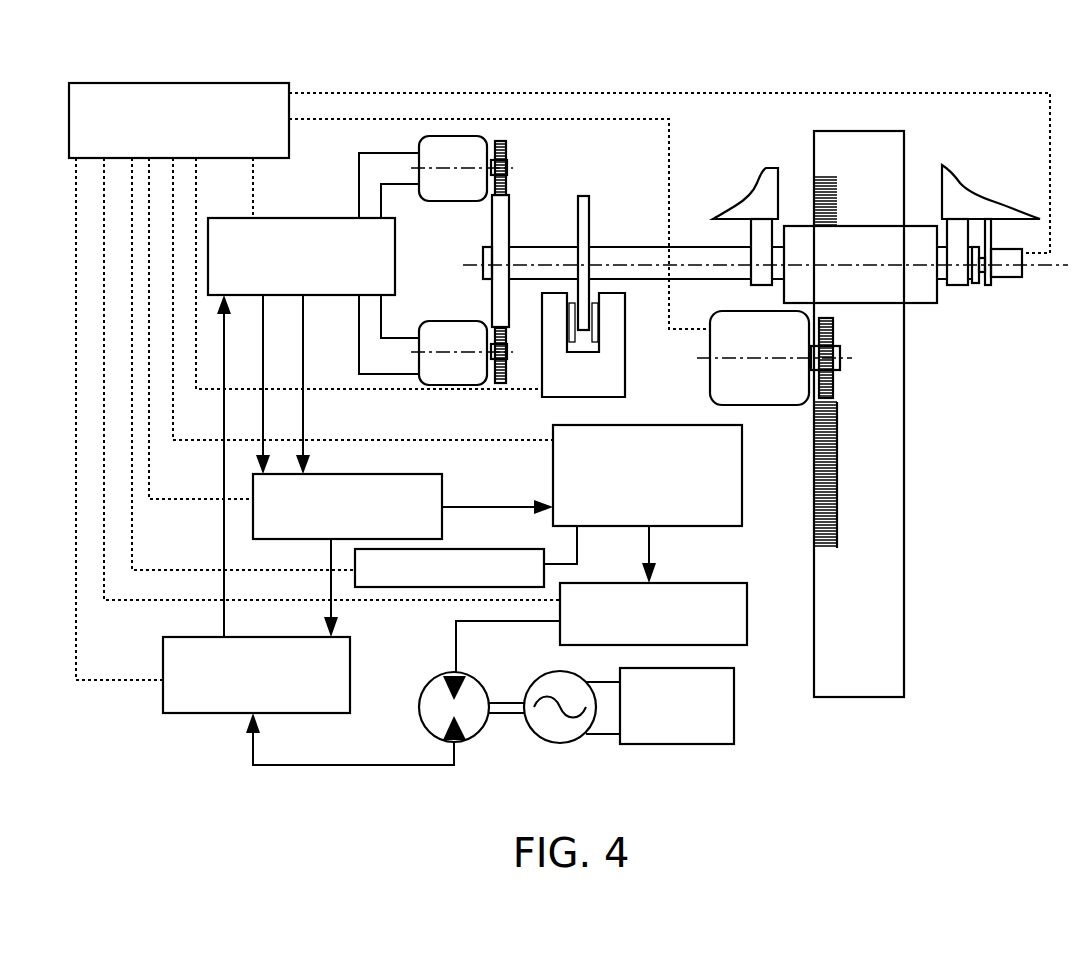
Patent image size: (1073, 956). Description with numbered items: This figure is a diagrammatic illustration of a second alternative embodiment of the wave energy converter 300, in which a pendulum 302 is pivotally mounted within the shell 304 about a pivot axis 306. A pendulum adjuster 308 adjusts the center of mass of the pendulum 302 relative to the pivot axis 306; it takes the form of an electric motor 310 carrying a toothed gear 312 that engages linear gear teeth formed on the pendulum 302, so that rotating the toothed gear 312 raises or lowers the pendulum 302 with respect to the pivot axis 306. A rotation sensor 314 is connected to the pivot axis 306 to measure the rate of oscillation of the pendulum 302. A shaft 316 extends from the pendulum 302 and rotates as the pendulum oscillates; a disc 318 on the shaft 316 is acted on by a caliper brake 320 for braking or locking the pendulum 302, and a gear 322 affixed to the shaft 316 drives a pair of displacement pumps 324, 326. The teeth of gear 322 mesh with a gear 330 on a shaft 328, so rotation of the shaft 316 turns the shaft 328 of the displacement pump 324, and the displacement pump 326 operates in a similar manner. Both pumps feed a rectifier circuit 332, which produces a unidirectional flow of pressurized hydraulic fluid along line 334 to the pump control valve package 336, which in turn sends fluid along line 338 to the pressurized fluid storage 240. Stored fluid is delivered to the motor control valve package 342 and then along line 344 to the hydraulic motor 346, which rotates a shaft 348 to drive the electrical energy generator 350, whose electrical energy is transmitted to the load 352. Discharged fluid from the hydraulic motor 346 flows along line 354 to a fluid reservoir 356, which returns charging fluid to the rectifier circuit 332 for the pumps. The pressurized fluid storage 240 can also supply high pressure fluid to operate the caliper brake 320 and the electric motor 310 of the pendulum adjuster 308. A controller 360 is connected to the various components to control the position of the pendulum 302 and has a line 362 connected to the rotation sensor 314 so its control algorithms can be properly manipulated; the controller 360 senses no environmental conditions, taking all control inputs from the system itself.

The wave energy converter 300 is at (965, 388).
The pendulum 302 is at (905, 464).
The shell 304 is at (965, 195).
The pivot axis 306 is at (978, 284).
The pendulum adjuster 308 is at (790, 405).
The electric motor 310 is at (718, 375).
The toothed gear 312 is at (835, 326).
The rotation sensor 314 is at (1012, 278).
The shaft 316 is at (693, 251).
The disc 318 is at (590, 210).
The caliper brake 320 is at (627, 340).
The gear 322 is at (505, 226).
The displacement pump 324 is at (455, 201).
The displacement pump 326 is at (452, 332).
The shaft 328 is at (508, 167).
The gear 330 is at (507, 146).
The rectifier circuit 332 is at (310, 218).
The line 334 is at (305, 412).
The pump control valve package 336 is at (442, 490).
The line 338 is at (512, 506).
The pressurized fluid storage 240 is at (735, 526).
The motor control valve package 342 is at (747, 618).
The line 344 is at (520, 622).
The hydraulic motor 346 is at (426, 687).
The shaft 348 is at (510, 714).
The electrical energy generator 350 is at (562, 743).
The load 352 is at (670, 744).
The line 354 is at (408, 765).
The fluid reservoir 356 is at (318, 708).
The controller 360 is at (275, 83).
The line 362 is at (823, 93).